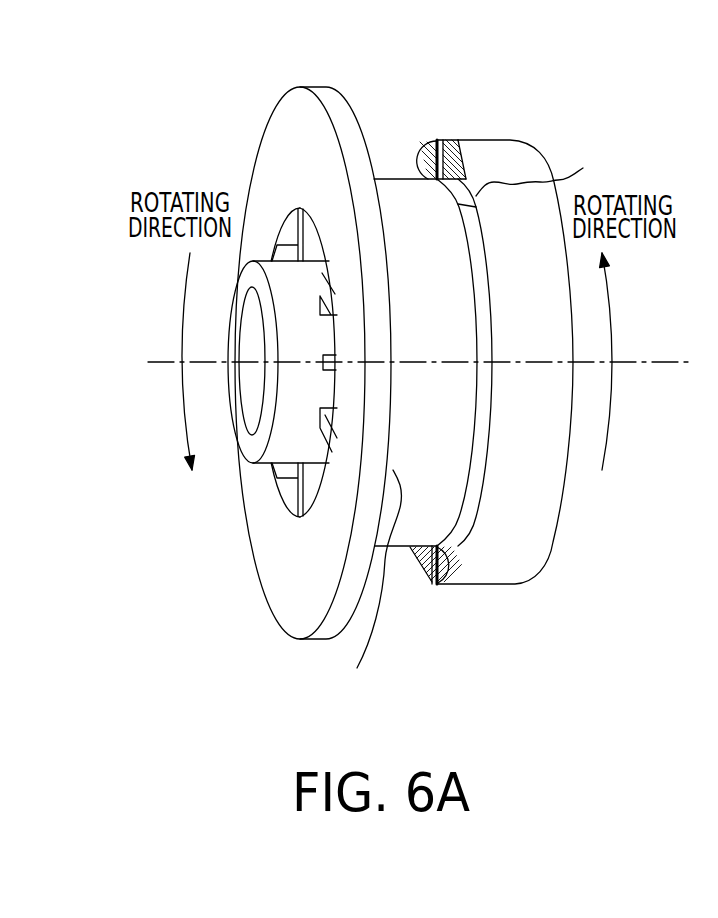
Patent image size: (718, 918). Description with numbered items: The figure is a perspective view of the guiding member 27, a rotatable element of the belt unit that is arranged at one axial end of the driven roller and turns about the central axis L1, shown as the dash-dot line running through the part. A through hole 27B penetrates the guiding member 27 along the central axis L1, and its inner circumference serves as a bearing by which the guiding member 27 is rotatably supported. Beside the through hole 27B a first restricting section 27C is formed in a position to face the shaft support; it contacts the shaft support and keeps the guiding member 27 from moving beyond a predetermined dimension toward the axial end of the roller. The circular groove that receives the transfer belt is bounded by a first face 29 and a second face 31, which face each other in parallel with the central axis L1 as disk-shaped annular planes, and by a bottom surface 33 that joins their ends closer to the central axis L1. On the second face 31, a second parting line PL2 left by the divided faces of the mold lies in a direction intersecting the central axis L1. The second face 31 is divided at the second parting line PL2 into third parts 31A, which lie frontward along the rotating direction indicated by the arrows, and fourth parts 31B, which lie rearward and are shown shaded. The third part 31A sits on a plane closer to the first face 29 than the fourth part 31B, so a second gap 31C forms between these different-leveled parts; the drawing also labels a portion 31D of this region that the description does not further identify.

The guiding member 27 is at (538, 131).
The through hole 27B is at (253, 393).
The first restricting section 27C is at (252, 455).
The first face 29 is at (415, 505).
The second face 31 is at (414, 167).
The third parts 31A is at (426, 162).
The fourth parts 31B is at (455, 148).
The second gap 31C is at (458, 140).
The boundary line on body surface 31D is at (553, 175).
The bottom surface 33 is at (371, 586).
The second parting line PL2 is at (452, 680).
The central axis L1 is at (667, 362).